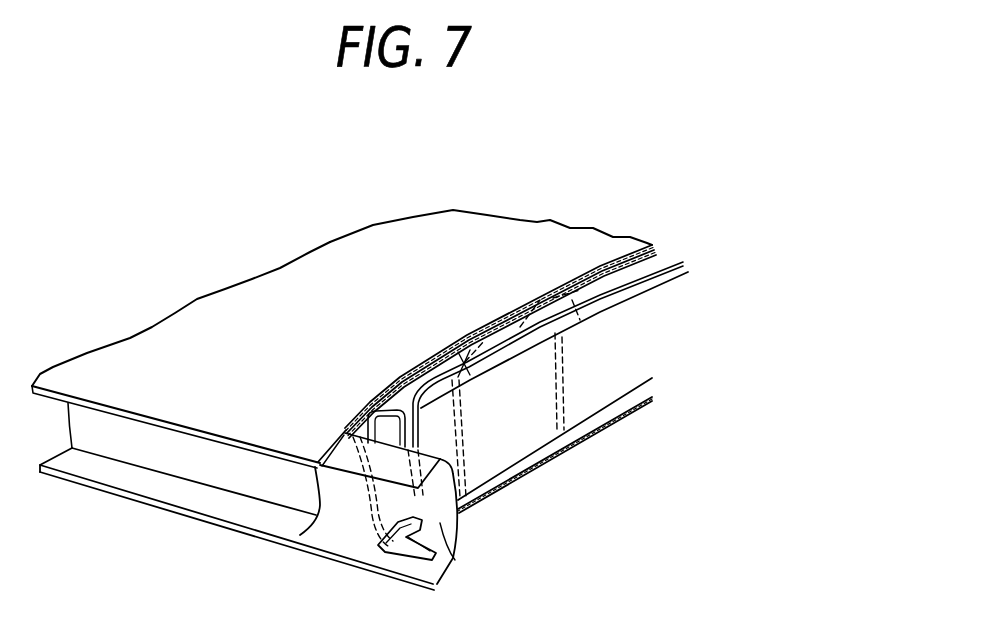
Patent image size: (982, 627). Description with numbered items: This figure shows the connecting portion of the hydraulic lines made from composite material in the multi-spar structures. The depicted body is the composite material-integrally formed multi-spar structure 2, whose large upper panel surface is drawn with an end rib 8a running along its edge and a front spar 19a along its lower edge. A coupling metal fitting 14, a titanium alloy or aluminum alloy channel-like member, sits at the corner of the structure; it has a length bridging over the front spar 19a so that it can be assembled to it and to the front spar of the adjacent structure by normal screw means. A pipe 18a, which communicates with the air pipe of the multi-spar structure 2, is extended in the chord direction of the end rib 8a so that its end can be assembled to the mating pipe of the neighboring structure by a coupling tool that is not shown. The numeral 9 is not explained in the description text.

The composite material-integrally formed multi-spar structure 2 is at (556, 217).
The panel 9 is at (283, 296).
The end rib 8a is at (418, 387).
The pipe 18a is at (498, 360).
The front spar 19a is at (120, 470).
The coupling metal fitting 14 is at (455, 556).